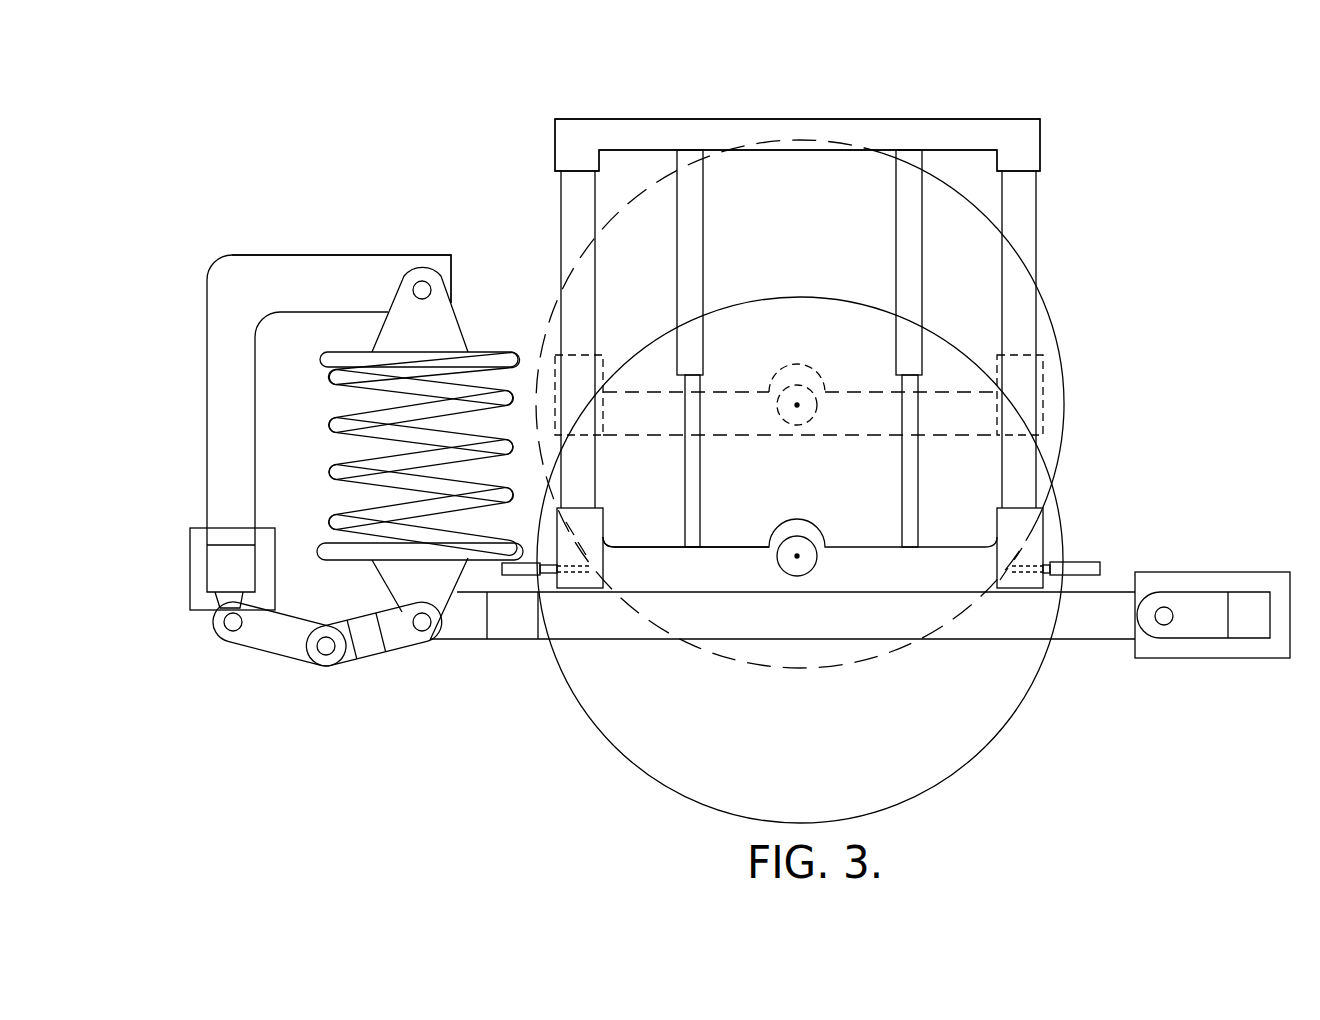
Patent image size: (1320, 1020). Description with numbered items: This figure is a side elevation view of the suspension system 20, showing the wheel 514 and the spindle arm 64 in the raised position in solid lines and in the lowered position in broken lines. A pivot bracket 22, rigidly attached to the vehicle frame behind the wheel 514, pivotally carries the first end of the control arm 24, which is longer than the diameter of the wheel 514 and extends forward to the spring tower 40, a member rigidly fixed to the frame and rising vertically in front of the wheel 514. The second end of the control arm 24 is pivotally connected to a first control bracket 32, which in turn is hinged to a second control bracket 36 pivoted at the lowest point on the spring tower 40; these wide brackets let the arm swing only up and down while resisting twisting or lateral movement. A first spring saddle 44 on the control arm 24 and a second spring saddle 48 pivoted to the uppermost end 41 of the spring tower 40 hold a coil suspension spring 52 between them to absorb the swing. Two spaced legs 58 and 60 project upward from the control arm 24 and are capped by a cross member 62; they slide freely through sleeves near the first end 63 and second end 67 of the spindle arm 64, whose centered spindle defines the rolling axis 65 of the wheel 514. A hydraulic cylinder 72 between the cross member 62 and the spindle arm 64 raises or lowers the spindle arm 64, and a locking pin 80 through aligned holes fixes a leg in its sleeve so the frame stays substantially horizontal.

The suspension system 20 is at (1200, 140).
The pivot bracket 22 is at (1233, 660).
The control arm 24 is at (1107, 642).
The first control bracket 32 is at (368, 656).
The second control bracket 36 is at (290, 656).
The spring tower 40 is at (207, 492).
The uppermost end 41 is at (420, 255).
The first spring saddle 44 is at (380, 582).
The second spring saddle 48 is at (465, 340).
The coil suspension spring 52 is at (340, 432).
The leg 58 is at (1040, 197).
The leg 60 is at (560, 205).
The cross member 62 is at (822, 118).
The first end 63 is at (982, 562).
The spindle arm 64 is at (729, 400).
The rolling axis 65 is at (800, 403).
The second end 67 is at (618, 554).
The hydraulic cylinder 72 is at (896, 262).
The locking pin 80 is at (533, 558).
The wheel 514 is at (1058, 385).